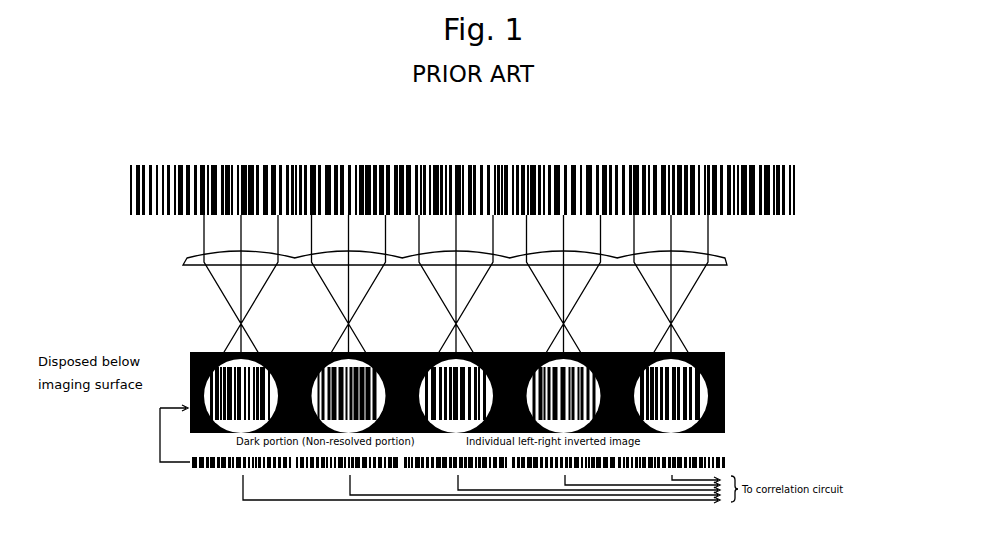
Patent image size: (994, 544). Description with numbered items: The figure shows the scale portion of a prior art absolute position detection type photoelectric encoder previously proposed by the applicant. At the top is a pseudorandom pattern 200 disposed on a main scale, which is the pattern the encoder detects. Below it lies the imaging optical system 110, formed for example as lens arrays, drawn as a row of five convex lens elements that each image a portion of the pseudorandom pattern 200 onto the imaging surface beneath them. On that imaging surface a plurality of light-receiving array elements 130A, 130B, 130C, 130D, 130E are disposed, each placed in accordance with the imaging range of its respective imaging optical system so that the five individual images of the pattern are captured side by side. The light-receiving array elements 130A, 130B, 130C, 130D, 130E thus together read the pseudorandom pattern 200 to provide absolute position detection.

The pseudorandom pattern 200 is at (462, 177).
The imaging optical system 110 is at (185, 243).
The light-receiving array element 130A is at (452, 480).
The light-receiving array element 130B is at (506, 477).
The light-receiving array element 130C is at (560, 475).
The light-receiving array element 130D is at (614, 473).
The light-receiving array element 130E is at (669, 473).